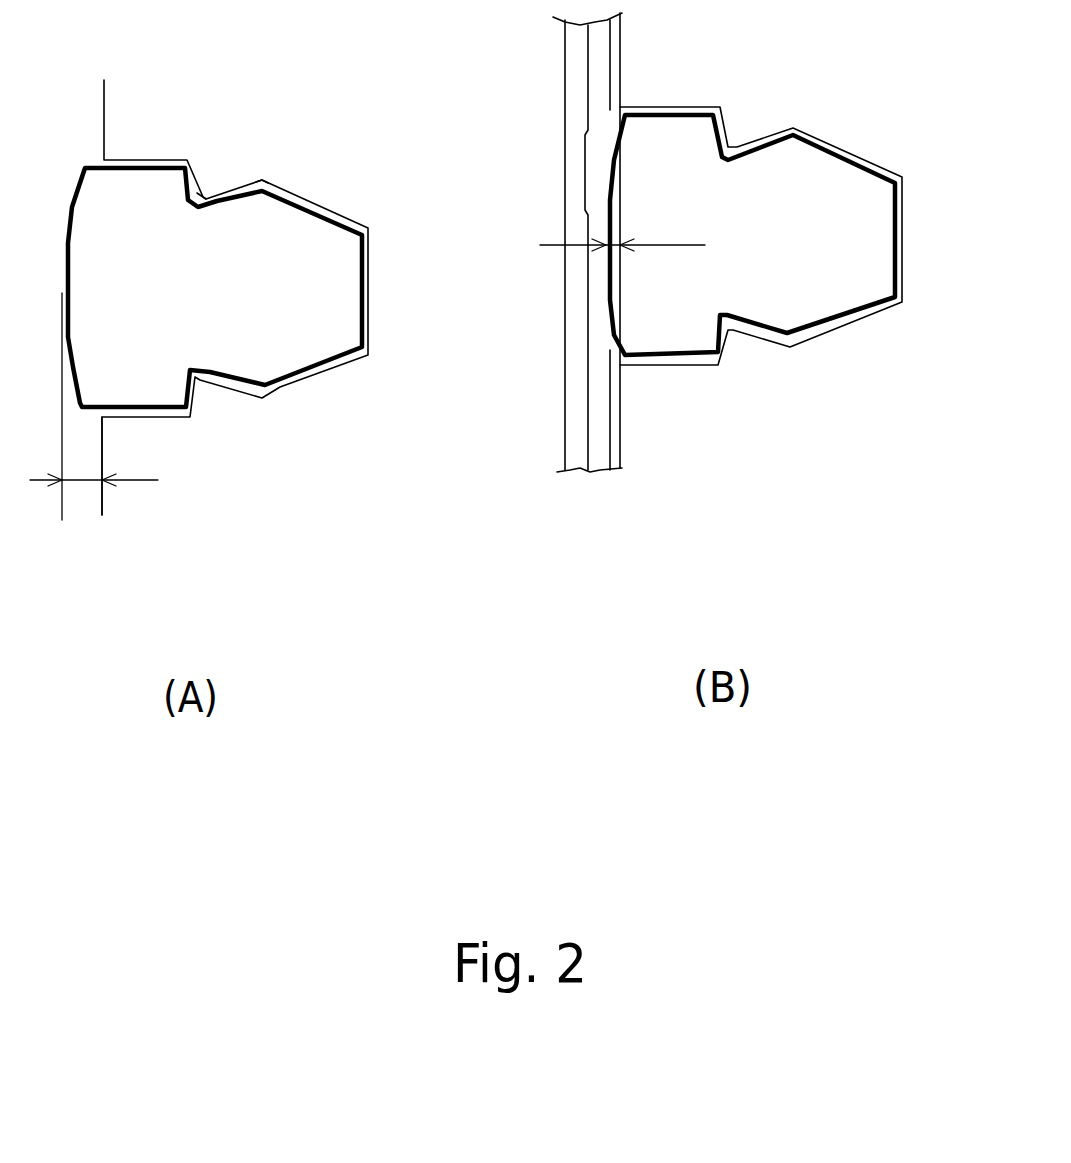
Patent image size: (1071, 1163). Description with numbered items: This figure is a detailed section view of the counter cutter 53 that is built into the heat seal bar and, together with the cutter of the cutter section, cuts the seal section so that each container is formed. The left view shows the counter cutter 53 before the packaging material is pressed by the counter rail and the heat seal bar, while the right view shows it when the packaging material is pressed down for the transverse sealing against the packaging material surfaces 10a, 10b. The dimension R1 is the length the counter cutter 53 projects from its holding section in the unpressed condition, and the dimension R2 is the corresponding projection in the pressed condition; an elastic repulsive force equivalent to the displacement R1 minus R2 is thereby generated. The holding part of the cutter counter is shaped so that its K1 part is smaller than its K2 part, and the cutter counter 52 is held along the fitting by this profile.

The seal member outer profile 52 is at (303, 197).
The counter cutter 53 is at (270, 340).
The K1 part of the holding part K1 is at (203, 195).
The K2 part of the holding part K2 is at (263, 180).
The projection length of the counter cutter before pressing R1 is at (94, 433).
The projection length of the counter cutter when pressed R2 is at (622, 219).
The inner surface of panel 10a is at (602, 472).
The outer surface of panel 10b is at (578, 475).